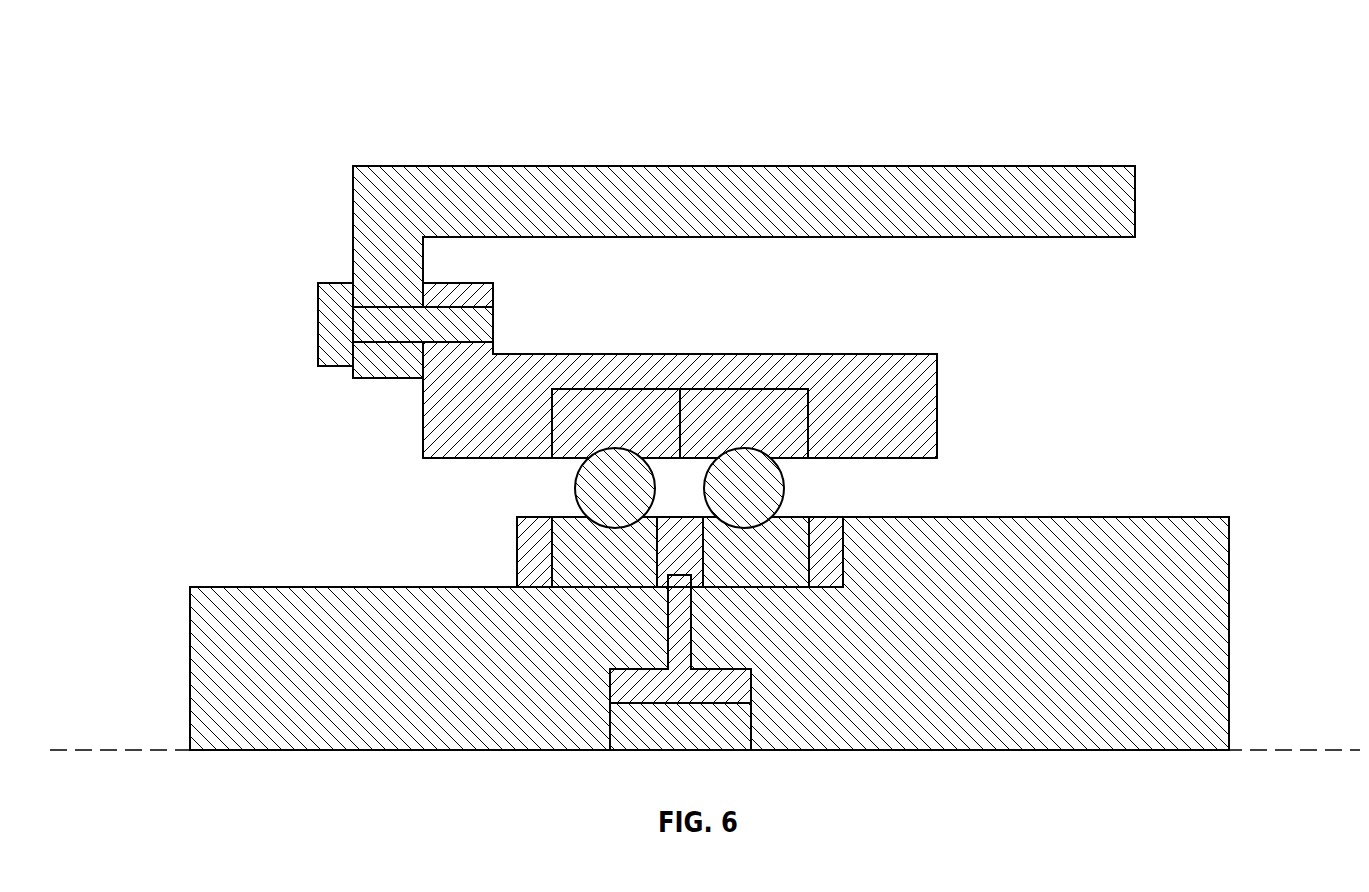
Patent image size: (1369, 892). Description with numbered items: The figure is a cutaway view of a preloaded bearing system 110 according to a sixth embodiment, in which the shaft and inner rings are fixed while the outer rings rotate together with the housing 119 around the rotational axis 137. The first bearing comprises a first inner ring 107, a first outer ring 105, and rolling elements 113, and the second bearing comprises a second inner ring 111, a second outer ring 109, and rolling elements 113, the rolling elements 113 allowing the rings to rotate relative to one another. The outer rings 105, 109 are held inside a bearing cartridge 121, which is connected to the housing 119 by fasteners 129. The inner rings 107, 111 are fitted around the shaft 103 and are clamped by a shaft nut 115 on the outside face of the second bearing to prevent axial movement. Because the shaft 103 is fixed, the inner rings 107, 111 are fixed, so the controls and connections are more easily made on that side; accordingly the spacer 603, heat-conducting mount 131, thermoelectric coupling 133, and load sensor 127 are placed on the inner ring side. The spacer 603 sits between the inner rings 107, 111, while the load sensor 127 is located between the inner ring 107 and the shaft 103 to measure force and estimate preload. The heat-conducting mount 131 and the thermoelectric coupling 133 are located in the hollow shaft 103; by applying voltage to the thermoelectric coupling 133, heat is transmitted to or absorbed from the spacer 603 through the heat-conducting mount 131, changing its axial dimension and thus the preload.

The preloaded bearing system 110 is at (230, 113).
The shaft 103 is at (1165, 533).
The first outer ring 105 is at (723, 403).
The first inner ring 107 is at (797, 540).
The second outer ring 109 is at (584, 403).
The second inner ring 111 is at (567, 541).
The rolling elements 113 is at (585, 497).
The shaft nut 115 is at (527, 574).
The housing 119 is at (1125, 212).
The bearing cartridge 121 is at (878, 362).
The load sensor 127 is at (832, 522).
The fasteners 129 is at (318, 349).
The heat-conducting mount 131 is at (751, 690).
The thermoelectric coupling 133 is at (751, 742).
The rotational axis 137 is at (113, 749).
The spacer 603 is at (666, 535).